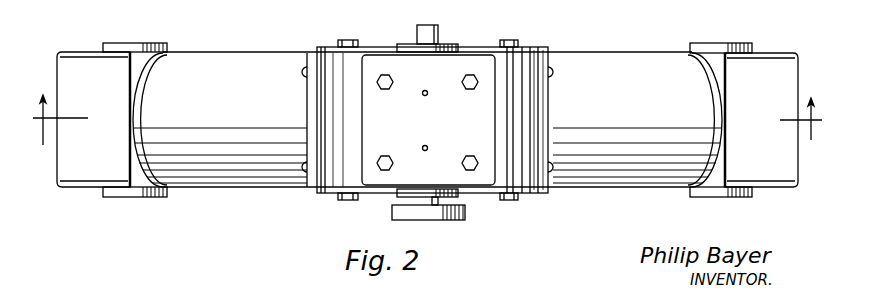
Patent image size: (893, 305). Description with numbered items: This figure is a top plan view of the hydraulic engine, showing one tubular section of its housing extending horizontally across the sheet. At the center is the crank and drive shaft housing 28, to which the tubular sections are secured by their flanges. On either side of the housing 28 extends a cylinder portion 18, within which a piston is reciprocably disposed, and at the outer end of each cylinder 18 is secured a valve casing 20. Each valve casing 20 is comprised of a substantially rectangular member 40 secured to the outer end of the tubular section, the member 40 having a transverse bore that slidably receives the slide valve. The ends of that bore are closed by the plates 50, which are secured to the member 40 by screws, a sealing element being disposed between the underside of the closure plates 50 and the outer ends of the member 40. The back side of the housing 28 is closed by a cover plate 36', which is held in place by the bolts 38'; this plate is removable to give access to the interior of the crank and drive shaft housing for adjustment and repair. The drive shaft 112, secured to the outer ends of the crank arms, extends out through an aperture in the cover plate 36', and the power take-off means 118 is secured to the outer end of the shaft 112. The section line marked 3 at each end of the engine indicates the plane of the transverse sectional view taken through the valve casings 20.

The cylinder 18 is at (221, 60).
The end cap / tie bolt 20 is at (85, 191).
The mounting flange 50 is at (150, 21).
The central housing block 28 is at (530, 93).
The housing band 36' is at (545, 102).
The nut 38' is at (496, 106).
The cover plate 40 is at (428, 120).
The shaft 112 is at (423, 200).
The disc 118 is at (458, 218).
The section line 3- 3 is at (427, 102).